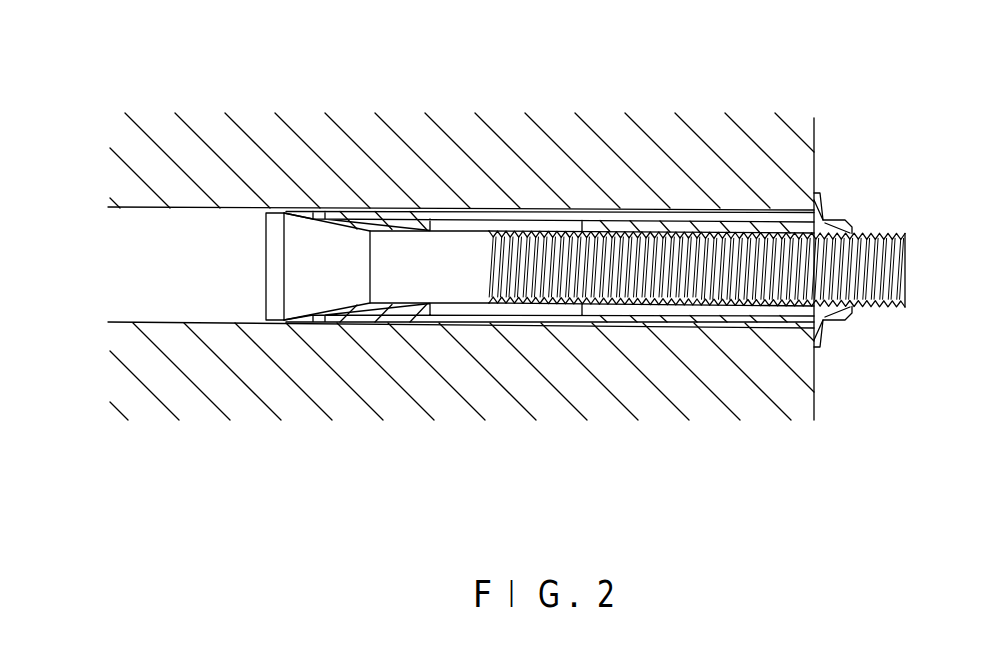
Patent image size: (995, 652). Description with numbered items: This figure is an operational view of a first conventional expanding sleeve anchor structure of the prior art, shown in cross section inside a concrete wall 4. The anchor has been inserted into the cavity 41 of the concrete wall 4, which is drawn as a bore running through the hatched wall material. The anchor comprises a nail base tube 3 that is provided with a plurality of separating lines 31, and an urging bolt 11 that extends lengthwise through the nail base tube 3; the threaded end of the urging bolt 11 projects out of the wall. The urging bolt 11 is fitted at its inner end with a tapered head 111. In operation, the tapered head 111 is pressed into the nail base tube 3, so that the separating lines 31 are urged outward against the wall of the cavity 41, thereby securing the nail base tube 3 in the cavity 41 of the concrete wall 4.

The nail base tube 3 is at (638, 228).
The concrete wall 4 is at (170, 127).
The urging bolt 11 is at (446, 291).
The separating lines 31 is at (404, 218).
The cavity 41 is at (122, 282).
The tapered head 111 is at (295, 216).